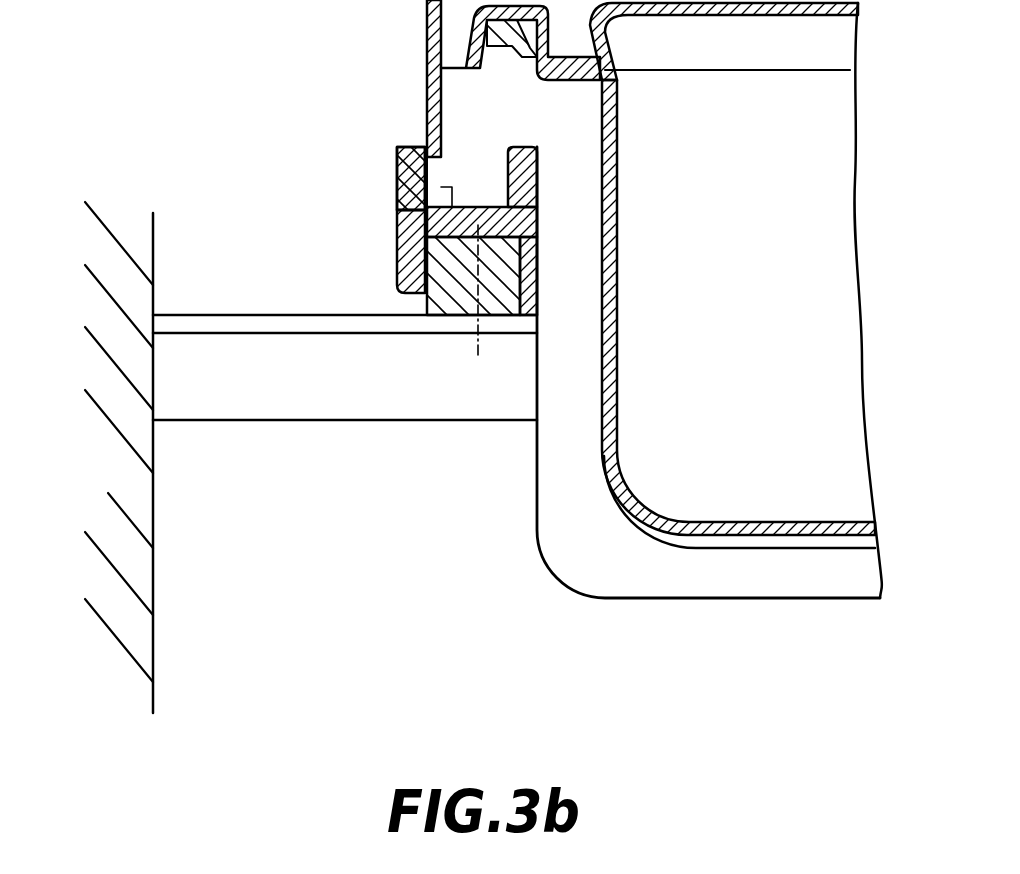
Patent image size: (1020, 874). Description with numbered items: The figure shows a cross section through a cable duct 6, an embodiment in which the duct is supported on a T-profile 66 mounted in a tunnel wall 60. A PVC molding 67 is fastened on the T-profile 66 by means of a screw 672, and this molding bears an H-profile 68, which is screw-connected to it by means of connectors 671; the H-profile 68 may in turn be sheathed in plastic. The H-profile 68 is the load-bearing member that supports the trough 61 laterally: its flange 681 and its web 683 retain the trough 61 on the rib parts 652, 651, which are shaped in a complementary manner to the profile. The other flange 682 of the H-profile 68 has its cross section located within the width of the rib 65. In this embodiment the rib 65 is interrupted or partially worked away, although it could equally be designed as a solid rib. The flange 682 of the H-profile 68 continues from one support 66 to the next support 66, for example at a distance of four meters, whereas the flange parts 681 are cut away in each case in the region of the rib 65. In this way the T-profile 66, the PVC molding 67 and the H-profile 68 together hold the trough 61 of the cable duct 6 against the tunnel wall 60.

The cable duct 6 is at (243, 692).
The tunnel wall 60 is at (125, 483).
The trough 61 is at (745, 545).
The rib 65 is at (603, 575).
The rib part 651 is at (545, 243).
The rib part 652 is at (487, 198).
The T-profile 66 is at (330, 392).
The PVC molding 67 is at (510, 302).
The connector 671 is at (398, 148).
The screw 672 is at (482, 346).
The H-profile 68 is at (552, 210).
The flange 681 is at (537, 178).
The flange 682 is at (408, 198).
The web 683 is at (398, 225).